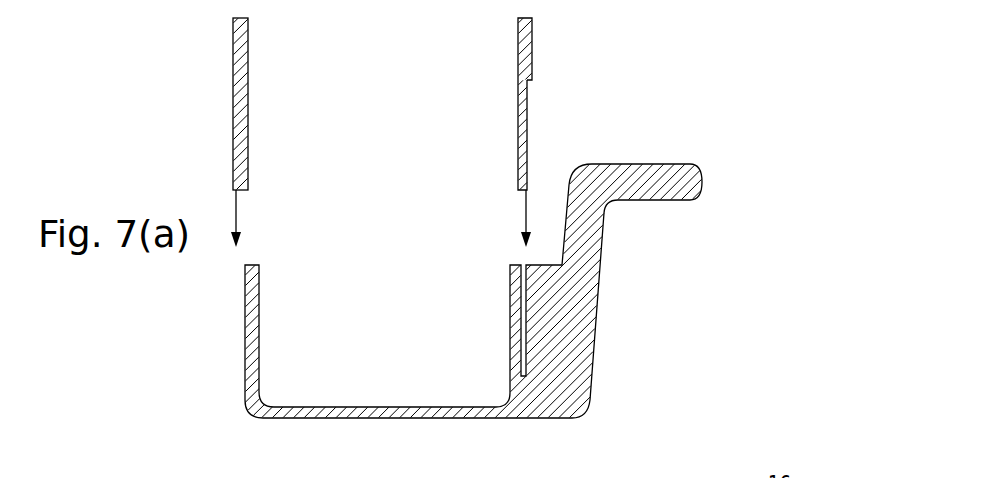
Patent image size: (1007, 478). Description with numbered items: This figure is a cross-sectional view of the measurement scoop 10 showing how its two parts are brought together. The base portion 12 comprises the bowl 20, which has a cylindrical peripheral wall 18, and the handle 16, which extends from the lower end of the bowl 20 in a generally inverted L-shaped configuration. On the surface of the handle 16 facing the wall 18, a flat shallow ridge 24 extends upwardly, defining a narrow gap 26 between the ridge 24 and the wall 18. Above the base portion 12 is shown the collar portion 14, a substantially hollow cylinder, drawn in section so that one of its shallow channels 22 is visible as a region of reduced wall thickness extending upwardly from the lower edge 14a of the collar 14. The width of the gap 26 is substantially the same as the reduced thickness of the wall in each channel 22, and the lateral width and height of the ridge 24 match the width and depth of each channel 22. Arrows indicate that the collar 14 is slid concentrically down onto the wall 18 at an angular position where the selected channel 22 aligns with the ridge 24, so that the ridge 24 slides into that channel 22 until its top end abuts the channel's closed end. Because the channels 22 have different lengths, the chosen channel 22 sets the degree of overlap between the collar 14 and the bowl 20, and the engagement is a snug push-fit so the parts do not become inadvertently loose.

The measurement scoop 10 is at (121, 122).
The base portion 12 is at (583, 277).
The collar portion 14 is at (234, 77).
The lower edge of the collar 14a is at (480, 193).
The handle 16 is at (645, 172).
The cylindrical peripheral wall 18 is at (248, 327).
The bowl 20 is at (389, 359).
The channels 22 is at (524, 118).
The ridge 24 is at (548, 313).
The gap 26 is at (527, 338).